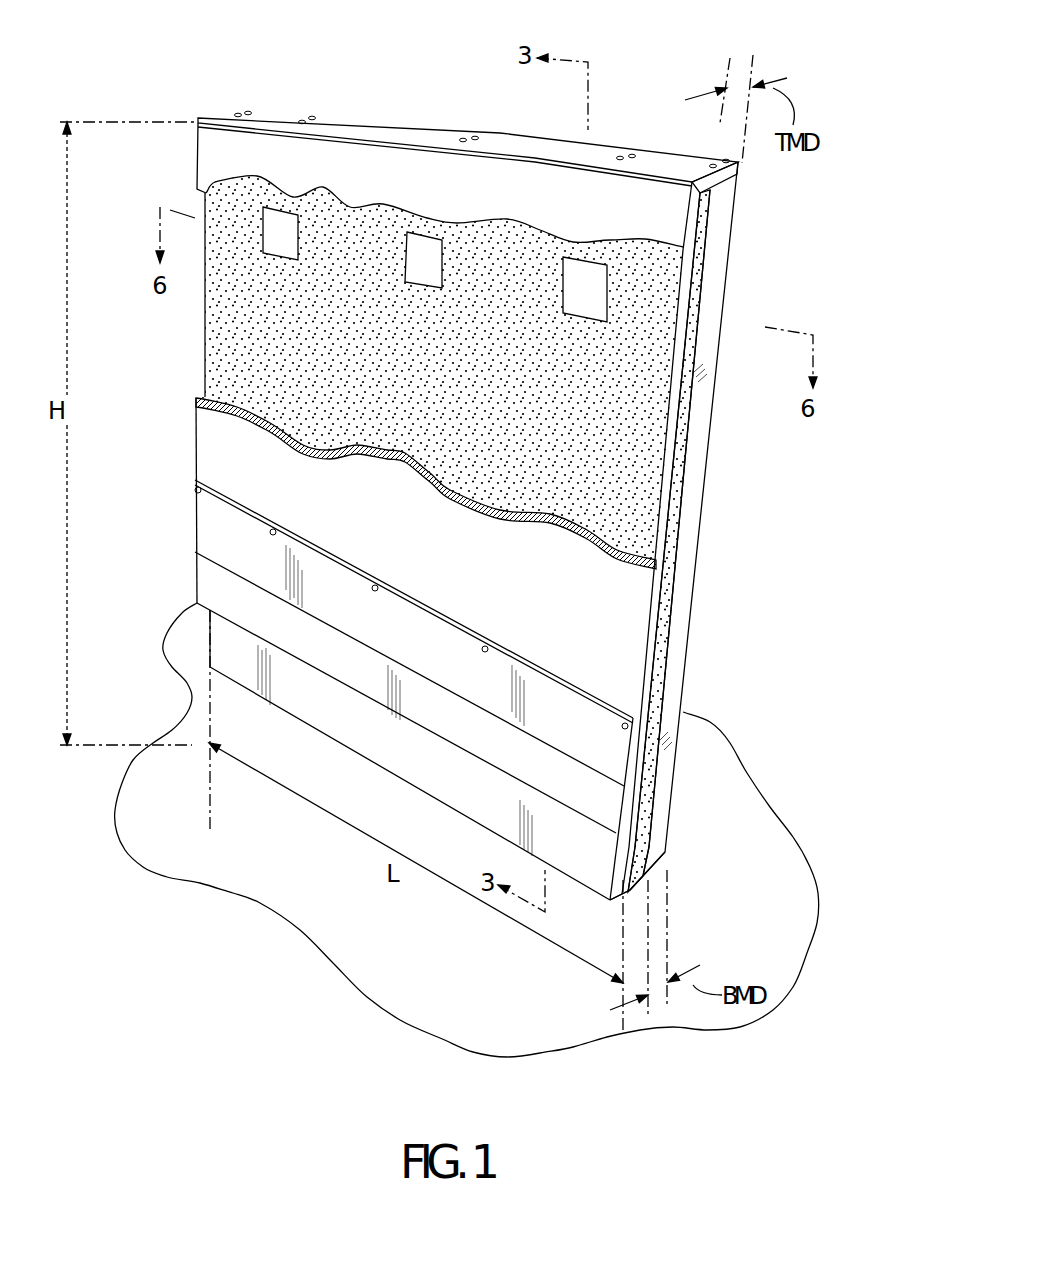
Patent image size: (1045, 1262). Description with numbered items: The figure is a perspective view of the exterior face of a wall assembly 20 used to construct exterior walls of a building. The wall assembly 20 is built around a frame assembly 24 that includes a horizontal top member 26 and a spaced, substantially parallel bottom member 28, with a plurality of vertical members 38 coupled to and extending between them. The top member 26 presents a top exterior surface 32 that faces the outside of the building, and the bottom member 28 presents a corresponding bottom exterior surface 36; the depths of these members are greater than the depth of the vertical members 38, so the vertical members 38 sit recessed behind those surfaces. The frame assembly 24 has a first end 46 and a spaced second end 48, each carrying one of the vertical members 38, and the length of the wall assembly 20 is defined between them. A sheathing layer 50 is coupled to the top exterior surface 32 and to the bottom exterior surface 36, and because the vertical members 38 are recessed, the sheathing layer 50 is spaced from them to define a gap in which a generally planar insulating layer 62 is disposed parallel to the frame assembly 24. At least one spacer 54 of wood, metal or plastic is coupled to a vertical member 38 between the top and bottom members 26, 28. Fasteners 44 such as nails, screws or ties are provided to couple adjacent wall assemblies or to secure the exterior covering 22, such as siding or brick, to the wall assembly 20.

The wall assembly 20 is at (465, 512).
The exterior covering 22 is at (613, 746).
The frame assembly 24 is at (737, 347).
The top member 26 is at (522, 137).
The bottom member 28 is at (663, 865).
The top exterior surface 32 is at (712, 180).
The bottom exterior surface 36 is at (641, 887).
The vertical members 38 is at (710, 478).
The fasteners 44 is at (238, 113).
The first end 46 is at (180, 573).
The second end 48 is at (718, 540).
The sheathing layer 50 is at (628, 622).
The spacer 54 is at (422, 265).
The insulating layer 62 is at (667, 323).